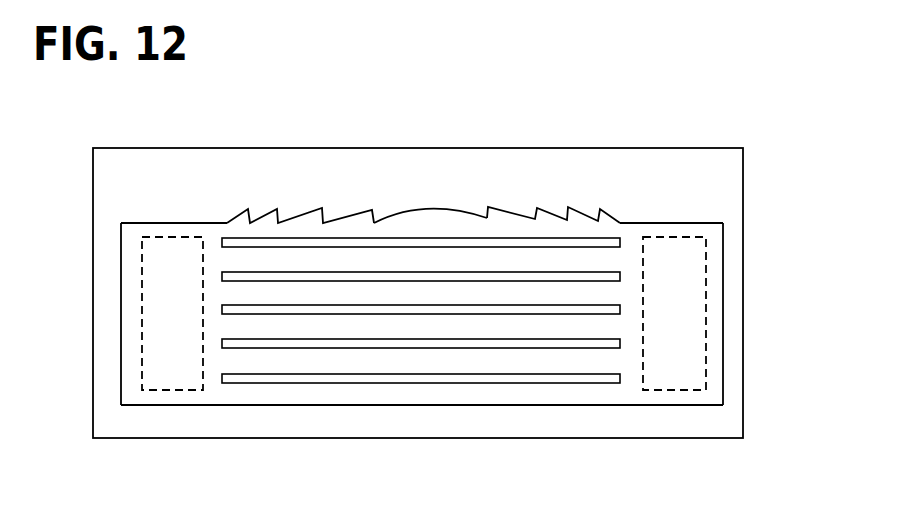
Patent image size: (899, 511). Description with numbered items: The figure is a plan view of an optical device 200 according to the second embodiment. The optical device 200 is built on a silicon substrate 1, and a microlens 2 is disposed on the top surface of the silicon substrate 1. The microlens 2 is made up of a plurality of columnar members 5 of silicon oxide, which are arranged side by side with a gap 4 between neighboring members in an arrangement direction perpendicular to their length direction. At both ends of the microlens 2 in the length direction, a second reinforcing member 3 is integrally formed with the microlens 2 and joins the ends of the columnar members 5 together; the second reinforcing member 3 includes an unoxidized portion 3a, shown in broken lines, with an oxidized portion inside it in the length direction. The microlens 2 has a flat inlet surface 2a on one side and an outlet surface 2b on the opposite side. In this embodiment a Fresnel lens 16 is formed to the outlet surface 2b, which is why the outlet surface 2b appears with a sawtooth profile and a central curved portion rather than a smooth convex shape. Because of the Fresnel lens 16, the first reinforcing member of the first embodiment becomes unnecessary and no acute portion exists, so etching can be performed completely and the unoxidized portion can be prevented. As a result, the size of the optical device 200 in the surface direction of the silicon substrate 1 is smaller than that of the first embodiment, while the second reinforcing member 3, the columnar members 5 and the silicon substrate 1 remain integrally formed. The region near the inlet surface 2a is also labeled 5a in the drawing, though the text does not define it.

The optical device 200 is at (766, 134).
The silicon substrate 1 is at (743, 257).
The microlens 2 is at (293, 197).
The inlet surface 2a is at (533, 405).
The outlet surface 2b is at (513, 212).
The Fresnel lens 16 is at (439, 210).
The second reinforcing member 3 is at (132, 383).
The unoxidized portion 3a is at (178, 377).
The gap 4 is at (257, 343).
The columnar members 5 is at (327, 360).
The lower margin region 5a is at (428, 398).